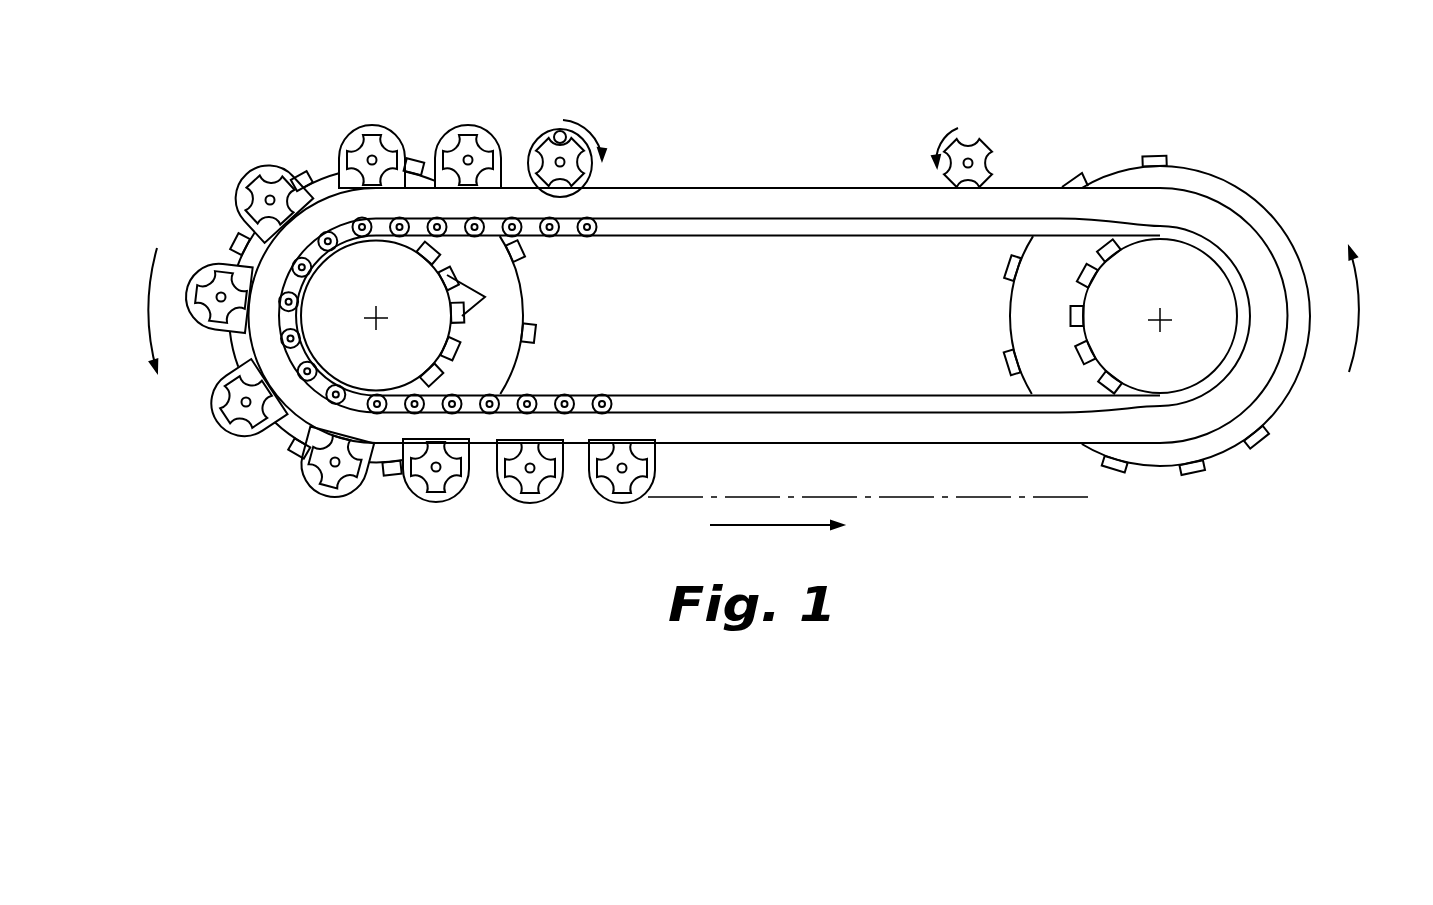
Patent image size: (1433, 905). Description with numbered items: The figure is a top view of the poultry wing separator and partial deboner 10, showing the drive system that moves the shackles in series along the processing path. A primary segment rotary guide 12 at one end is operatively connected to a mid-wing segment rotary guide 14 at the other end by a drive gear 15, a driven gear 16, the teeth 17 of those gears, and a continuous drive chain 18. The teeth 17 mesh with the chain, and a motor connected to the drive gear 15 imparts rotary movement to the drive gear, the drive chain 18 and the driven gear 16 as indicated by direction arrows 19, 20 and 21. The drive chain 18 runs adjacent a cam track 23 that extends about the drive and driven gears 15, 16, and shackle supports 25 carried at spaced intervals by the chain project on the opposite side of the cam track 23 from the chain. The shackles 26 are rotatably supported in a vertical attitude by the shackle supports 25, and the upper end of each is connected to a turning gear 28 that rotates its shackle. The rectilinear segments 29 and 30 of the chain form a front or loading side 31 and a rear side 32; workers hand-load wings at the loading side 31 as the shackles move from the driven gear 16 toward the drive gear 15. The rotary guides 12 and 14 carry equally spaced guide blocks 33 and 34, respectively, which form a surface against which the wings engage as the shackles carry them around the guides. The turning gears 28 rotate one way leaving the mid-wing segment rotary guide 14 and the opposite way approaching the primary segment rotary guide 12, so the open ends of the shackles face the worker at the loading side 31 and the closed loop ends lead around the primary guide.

The poultry wing separator and partial deboner 10 is at (845, 128).
The primary segment rotary guide 12 is at (538, 297).
The mid-wing segment rotary guide 14 is at (1010, 316).
The drive gear 15 is at (362, 299).
The driven gear 16 is at (1147, 301).
The teeth 17 is at (482, 295).
The continuous drive chain 18 is at (893, 230).
The direction arrow 19 is at (147, 296).
The direction arrow 20 is at (1372, 294).
The direction arrow 21 is at (767, 534).
The cam track 23 is at (722, 206).
The shackle supports 25 is at (360, 127).
The shackles 26 is at (469, 158).
The turning gear 28 is at (546, 135).
The rectilinear segment 29 is at (807, 243).
The rectilinear segment 30 is at (848, 390).
The loading side 31 is at (748, 186).
The rear side 32 is at (778, 406).
The guide blocks 33 is at (412, 156).
The guide blocks 34 is at (1000, 272).